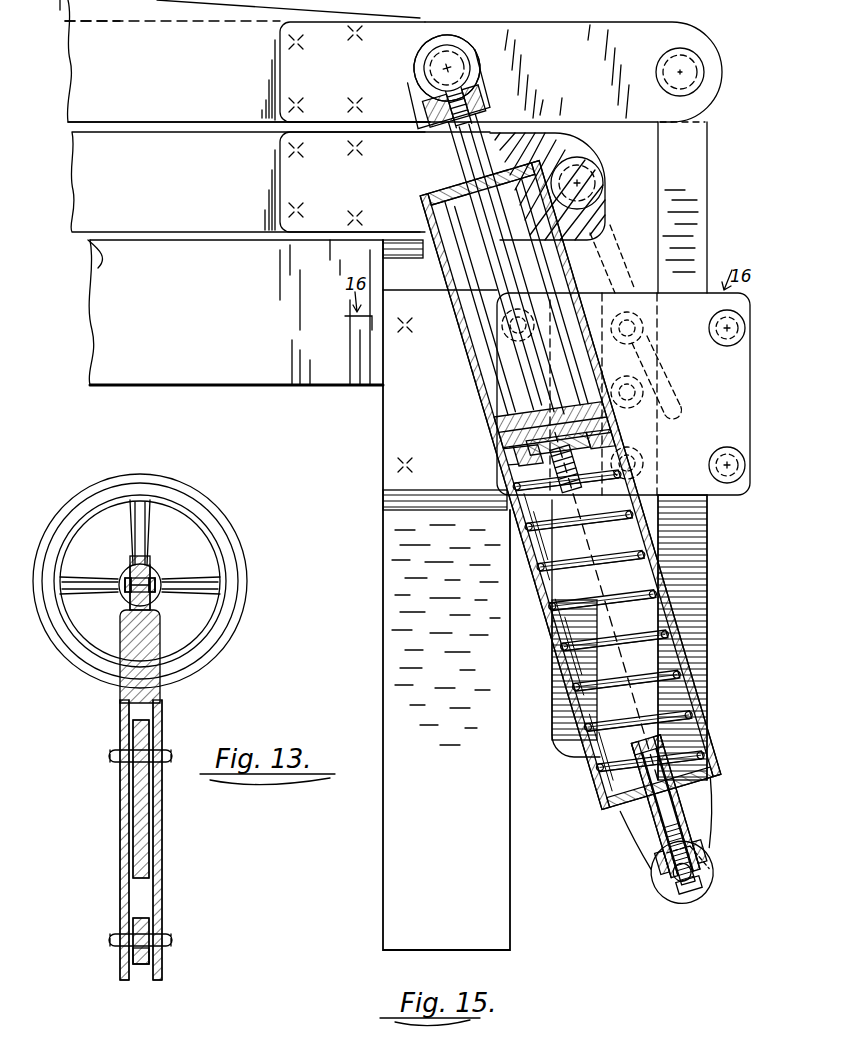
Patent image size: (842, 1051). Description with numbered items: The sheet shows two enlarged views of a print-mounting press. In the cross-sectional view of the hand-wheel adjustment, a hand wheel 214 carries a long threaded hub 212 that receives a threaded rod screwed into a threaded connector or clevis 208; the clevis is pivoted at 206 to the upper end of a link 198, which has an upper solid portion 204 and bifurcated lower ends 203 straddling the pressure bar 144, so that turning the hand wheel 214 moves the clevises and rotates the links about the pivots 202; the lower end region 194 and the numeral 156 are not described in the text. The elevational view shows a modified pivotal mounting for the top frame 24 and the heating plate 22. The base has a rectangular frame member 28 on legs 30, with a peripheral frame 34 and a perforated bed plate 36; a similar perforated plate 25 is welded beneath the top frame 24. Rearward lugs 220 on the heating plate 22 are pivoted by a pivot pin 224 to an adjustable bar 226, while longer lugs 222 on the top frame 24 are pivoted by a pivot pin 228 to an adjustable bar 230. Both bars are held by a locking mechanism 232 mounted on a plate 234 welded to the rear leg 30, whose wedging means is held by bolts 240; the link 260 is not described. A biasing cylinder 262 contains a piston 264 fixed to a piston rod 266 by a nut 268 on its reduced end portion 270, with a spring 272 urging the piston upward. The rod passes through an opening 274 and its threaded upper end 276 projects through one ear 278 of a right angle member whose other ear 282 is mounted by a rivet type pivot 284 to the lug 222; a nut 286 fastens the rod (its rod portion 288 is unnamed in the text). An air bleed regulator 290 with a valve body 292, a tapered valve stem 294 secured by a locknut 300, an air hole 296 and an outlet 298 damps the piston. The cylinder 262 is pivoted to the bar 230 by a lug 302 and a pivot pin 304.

In FIG. 15, the frame member 156 is at (72, 12).
In FIG. 15, the top or pressure frame 24 is at (66, 78).
In FIG. 15, the perforated steel plate 25 is at (112, 128).
In FIG. 15, the heating plate 22 is at (72, 202).
In FIG. 15, the bed plate 36 is at (80, 276).
In FIG. 15, the peripheral frame 34 is at (100, 302).
In FIG. 15, the rectangular frame member 28 is at (190, 386).
In FIG. 15, the lugs or ears 220 is at (368, 193).
In FIG. 15, the lugs or ears 222 is at (578, 14).
In FIG. 15, the pivot pin 228 is at (690, 82).
In FIG. 15, the locking mechanism 232 is at (712, 264).
In FIG. 15, the vertically adjustable bar 230 is at (690, 582).
In FIG. 15, the pivot pin 224 is at (585, 175).
In FIG. 15, the link 260 is at (625, 262).
In FIG. 15, the plate 234 is at (385, 433).
In FIG. 15, the bolts 240 is at (722, 330).
In FIG. 15, the vertically adjustable bar 226 is at (574, 738).
In FIG. 15, the legs 30 is at (478, 818).
In FIG. 15, the threaded upper end 276 is at (412, 78).
In FIG. 15, the rivet type pivot 284 is at (447, 68).
In FIG. 15, the ear 282 is at (447, 34).
In FIG. 15, the ear 278 is at (490, 100).
In FIG. 15, the nut 286 is at (432, 118).
In FIG. 15, the piston rod 288 is at (452, 205).
In FIG. 15, the opening 274 is at (452, 186).
In FIG. 15, the piston rod 266 is at (492, 312).
In FIG. 15, the piston 264 is at (495, 420).
In FIG. 15, the nut 268 is at (588, 445).
In FIG. 15, the cylinder 262 is at (500, 450).
In FIG. 15, the reduced end portion 270 is at (562, 488).
In FIG. 15, the spring 272 is at (568, 610).
In FIG. 15, the outlet 298 is at (636, 742).
In FIG. 15, the air bleed regulator 290 is at (648, 823).
In FIG. 15, the air hole 296 is at (700, 790).
In FIG. 15, the lug 302 is at (704, 889).
In FIG. 15, the locknut 300 is at (662, 880).
In FIG. 15, the pivot pin 304 is at (700, 868).
In FIG. 15, the valve body 292 is at (660, 833).
In FIG. 15, the tapered valve stem 294 is at (666, 858).
In FIG. 13, the hand wheel 214 is at (150, 490).
In FIG. 13, the long hub 212 is at (126, 565).
In FIG. 13, the threaded connector or clevis 208 is at (162, 576).
In FIG. 13, the pivot 206 is at (130, 588).
In FIG. 13, the upper solid portion 204 is at (165, 668).
In FIG. 13, the bifurcated link 198 is at (118, 851).
In FIG. 13, the pressure bar 144 is at (140, 830).
In FIG. 13, the bifurcated lower ends 203 is at (165, 882).
In FIG. 13, the pivots 202 is at (108, 752).
In FIG. 13, the lower block 194 is at (140, 965).